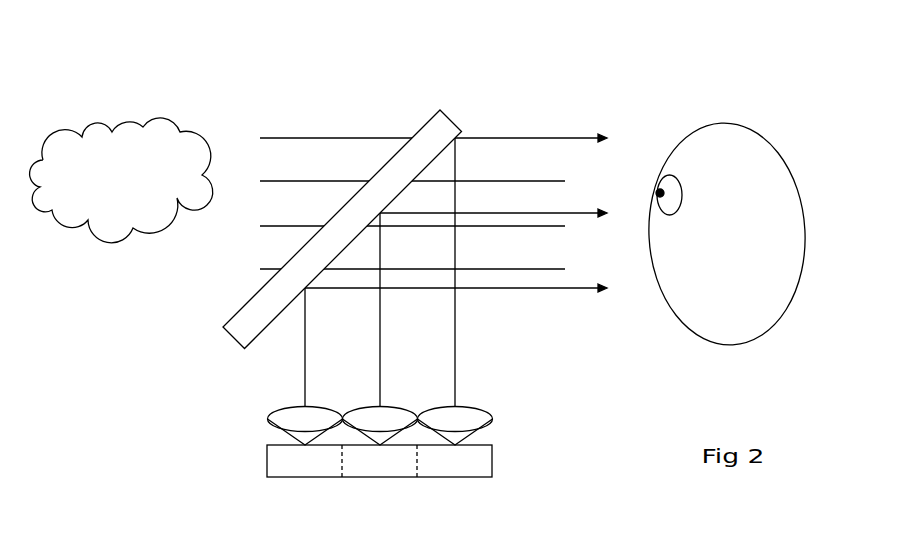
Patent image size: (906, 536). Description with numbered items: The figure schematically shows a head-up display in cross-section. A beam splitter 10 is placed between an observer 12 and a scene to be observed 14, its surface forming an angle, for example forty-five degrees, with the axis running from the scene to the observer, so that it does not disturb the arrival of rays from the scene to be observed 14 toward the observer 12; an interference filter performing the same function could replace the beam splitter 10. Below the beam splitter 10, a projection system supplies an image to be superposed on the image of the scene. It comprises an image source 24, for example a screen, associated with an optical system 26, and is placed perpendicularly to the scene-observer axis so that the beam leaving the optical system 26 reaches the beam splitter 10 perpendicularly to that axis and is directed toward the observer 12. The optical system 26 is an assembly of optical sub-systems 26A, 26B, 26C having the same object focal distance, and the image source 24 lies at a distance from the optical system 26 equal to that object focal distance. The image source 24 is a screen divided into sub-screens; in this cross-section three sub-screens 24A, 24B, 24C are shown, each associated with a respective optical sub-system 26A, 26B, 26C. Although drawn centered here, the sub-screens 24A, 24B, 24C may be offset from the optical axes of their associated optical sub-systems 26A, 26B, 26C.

The beam splitter 10 is at (437, 128).
The observer 12 is at (725, 138).
The scene to be observed 14 is at (97, 142).
The image source 24 is at (428, 483).
The sub-screen 24A is at (302, 467).
The sub-screen 24B is at (378, 467).
The sub-screen 24C is at (455, 467).
The optical system 26 is at (416, 405).
The optical sub-system 26A is at (285, 417).
The optical sub-system 26B is at (365, 417).
The optical sub-system 26C is at (440, 417).